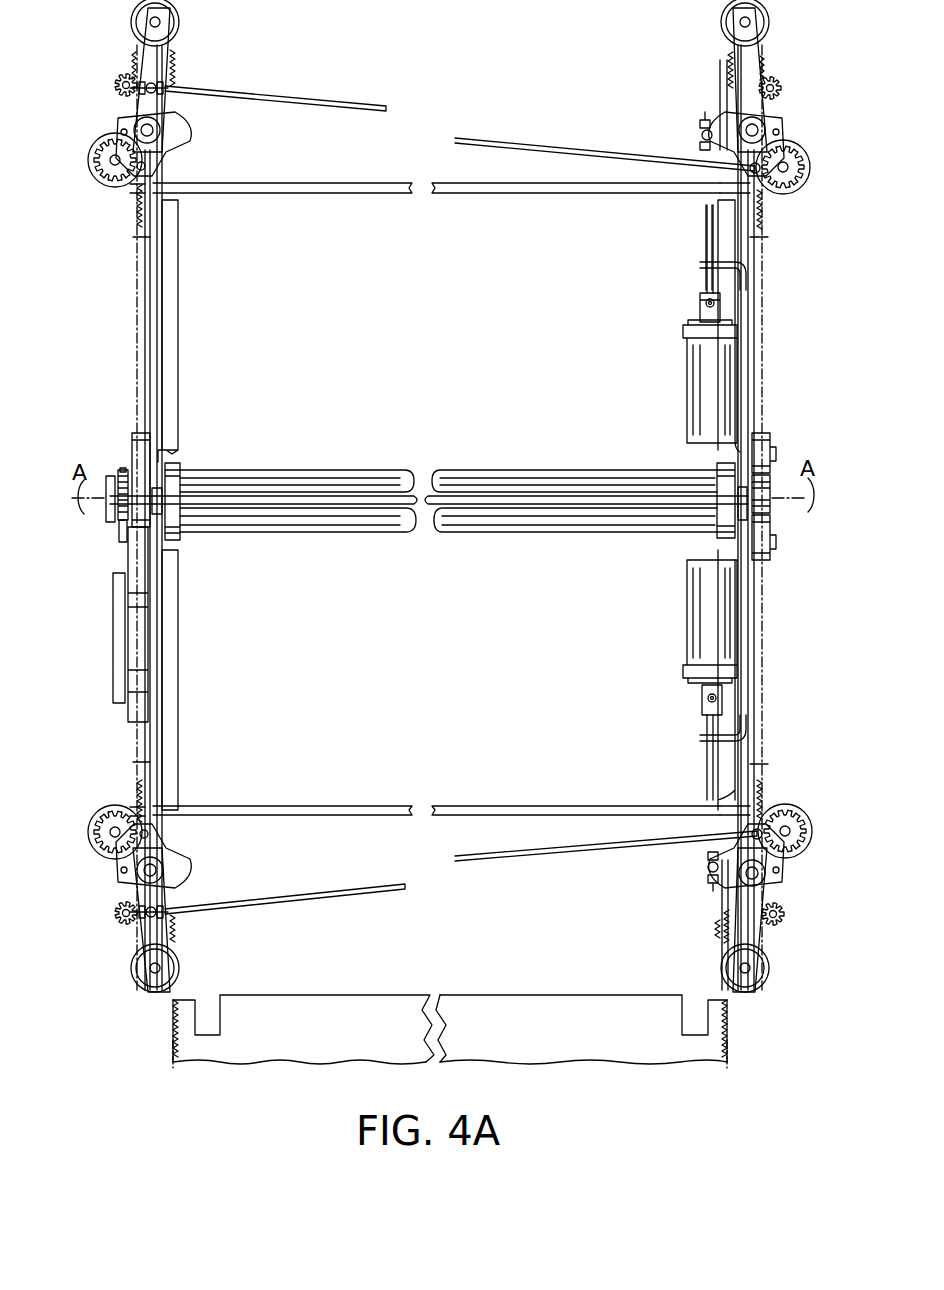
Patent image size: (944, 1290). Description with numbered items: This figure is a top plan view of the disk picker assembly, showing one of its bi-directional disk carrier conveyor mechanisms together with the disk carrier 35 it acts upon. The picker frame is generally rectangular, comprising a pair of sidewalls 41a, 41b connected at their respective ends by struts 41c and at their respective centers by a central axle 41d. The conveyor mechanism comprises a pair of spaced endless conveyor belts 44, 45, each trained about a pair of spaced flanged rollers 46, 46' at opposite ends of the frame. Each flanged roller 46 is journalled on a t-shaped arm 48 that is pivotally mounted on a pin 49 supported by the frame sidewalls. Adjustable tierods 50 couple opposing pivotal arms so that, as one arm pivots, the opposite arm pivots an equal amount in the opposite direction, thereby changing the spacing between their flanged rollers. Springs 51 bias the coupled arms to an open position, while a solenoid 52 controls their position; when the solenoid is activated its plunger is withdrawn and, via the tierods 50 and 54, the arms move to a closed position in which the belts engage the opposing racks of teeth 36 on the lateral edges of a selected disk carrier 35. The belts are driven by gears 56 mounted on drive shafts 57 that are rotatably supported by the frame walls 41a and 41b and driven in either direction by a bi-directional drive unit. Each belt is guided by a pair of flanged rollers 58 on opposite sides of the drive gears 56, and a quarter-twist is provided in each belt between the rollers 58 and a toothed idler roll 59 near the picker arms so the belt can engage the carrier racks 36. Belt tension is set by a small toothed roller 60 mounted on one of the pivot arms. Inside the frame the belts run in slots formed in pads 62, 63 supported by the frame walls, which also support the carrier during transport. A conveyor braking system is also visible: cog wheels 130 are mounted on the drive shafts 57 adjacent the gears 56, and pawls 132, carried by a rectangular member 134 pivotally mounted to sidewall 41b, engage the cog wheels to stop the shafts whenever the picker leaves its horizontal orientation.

The disk carrier 35 is at (418, 984).
The rack of teeth 36 is at (168, 1027).
The sidewall 41a is at (748, 358).
The sidewall 41b is at (148, 356).
The strut 41c is at (436, 196).
The central axle 41d is at (302, 468).
The endless conveyor belt 44 is at (709, 938).
The endless conveyor belt 45 is at (182, 939).
The flanged roller 46 is at (472, 968).
The flanged roller 46' is at (450, 23).
The t-shaped arm 48 is at (172, 72).
The pin 49 is at (158, 130).
The adjustable tierod 50 is at (288, 100).
The spring 51 is at (126, 224).
The solenoid 52 is at (700, 378).
The tierod 54 is at (705, 242).
The gear 56 is at (160, 542).
The drive shaft 57 is at (424, 472).
The flanged roller 58 is at (130, 436).
The toothed idler roll 59 is at (108, 138).
The small toothed roller 60 is at (128, 76).
The pad 62 is at (178, 324).
The pad 63 is at (172, 720).
The cog wheel 130 is at (121, 466).
The pawl 132 is at (120, 540).
The rectangular member 134 is at (118, 630).